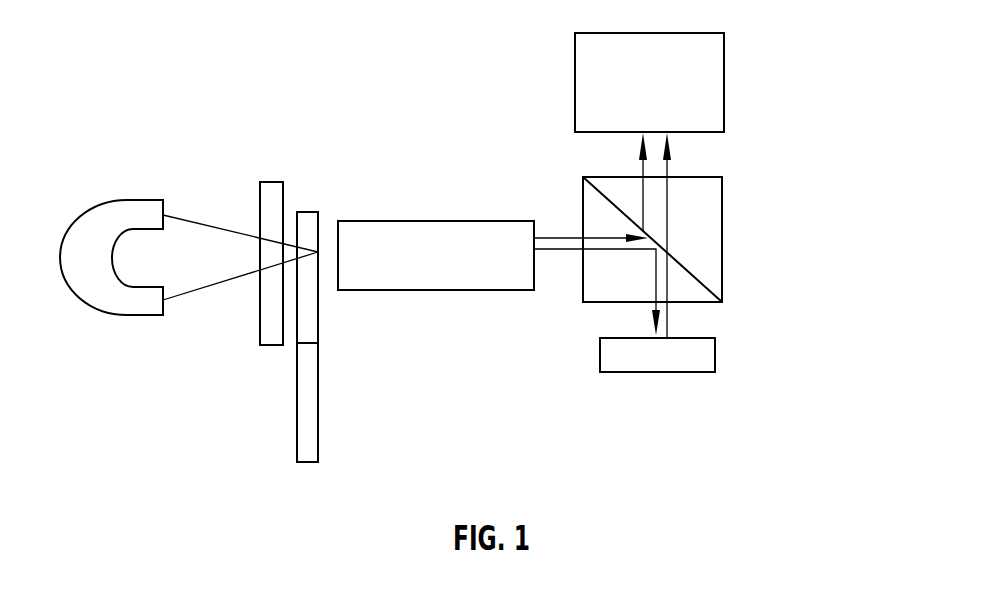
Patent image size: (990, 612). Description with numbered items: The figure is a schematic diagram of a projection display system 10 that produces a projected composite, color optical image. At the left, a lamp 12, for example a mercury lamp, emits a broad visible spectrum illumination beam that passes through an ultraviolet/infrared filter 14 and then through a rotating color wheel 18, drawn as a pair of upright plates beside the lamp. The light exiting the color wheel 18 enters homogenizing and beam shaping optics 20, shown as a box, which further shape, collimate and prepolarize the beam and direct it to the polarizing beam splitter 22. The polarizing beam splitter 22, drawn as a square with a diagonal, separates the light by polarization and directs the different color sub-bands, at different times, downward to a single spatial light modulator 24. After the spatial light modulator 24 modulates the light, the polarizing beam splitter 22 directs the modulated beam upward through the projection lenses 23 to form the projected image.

The projection display system 10 is at (893, 153).
The lamp 12 is at (189, 239).
The ultraviolet/infrared (UV/IR) filter 14 is at (220, 281).
The color wheel 18 is at (343, 399).
The homogenizing and beam shaping optics 20 is at (436, 235).
The polarizing beam splitter 22 is at (692, 239).
The projection lenses 23 is at (688, 82).
The spatial light modulator 24 is at (696, 341).